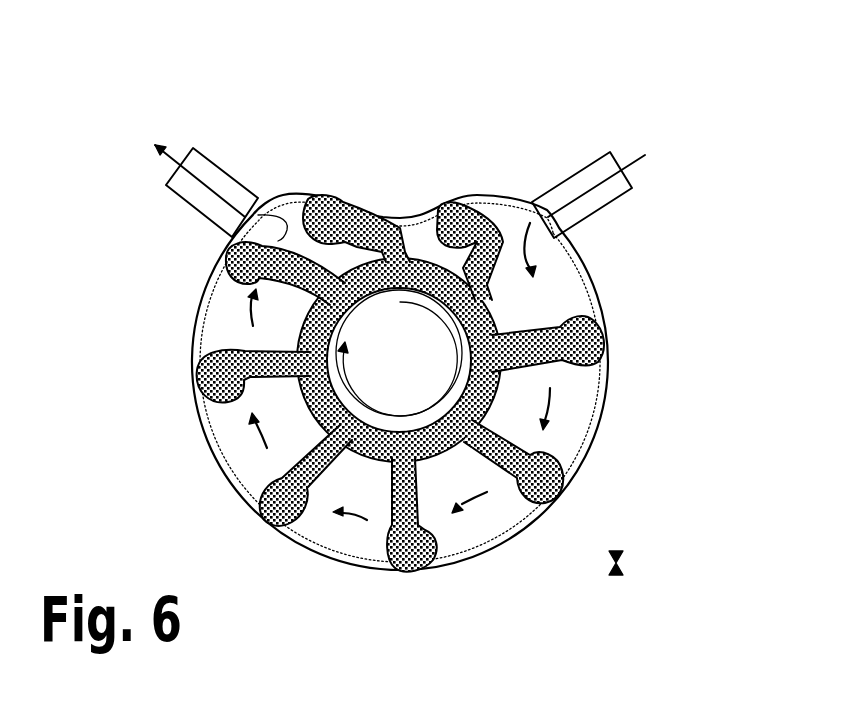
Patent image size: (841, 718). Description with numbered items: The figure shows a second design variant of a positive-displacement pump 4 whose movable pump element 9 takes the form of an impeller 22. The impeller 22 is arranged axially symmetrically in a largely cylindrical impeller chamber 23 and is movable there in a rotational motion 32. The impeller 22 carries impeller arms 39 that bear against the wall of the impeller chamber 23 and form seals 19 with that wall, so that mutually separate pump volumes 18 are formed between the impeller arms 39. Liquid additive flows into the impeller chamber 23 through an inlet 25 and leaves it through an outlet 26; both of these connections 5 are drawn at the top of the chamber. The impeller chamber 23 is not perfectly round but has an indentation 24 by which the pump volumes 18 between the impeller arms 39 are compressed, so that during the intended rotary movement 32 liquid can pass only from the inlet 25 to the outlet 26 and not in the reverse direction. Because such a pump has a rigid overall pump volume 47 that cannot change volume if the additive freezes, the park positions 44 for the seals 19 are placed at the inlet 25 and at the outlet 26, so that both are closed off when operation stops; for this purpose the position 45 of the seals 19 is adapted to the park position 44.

The positive-displacement pump 4 is at (693, 176).
The connection fitting 5 is at (418, 185).
The movable pump element 9 is at (503, 327).
The pump volumes 18 is at (580, 414).
The seals 19 is at (603, 342).
The impeller 22 is at (373, 208).
The impeller chamber 23 is at (523, 532).
The indentation 24 is at (427, 207).
The inlet 25 is at (597, 210).
The outlet 26 is at (235, 217).
The rotational motion 32 is at (372, 408).
The impeller arms 39 is at (420, 562).
The park positions 44 is at (546, 218).
The position of the seals 45 is at (260, 517).
The overall pump volume 47 is at (497, 547).